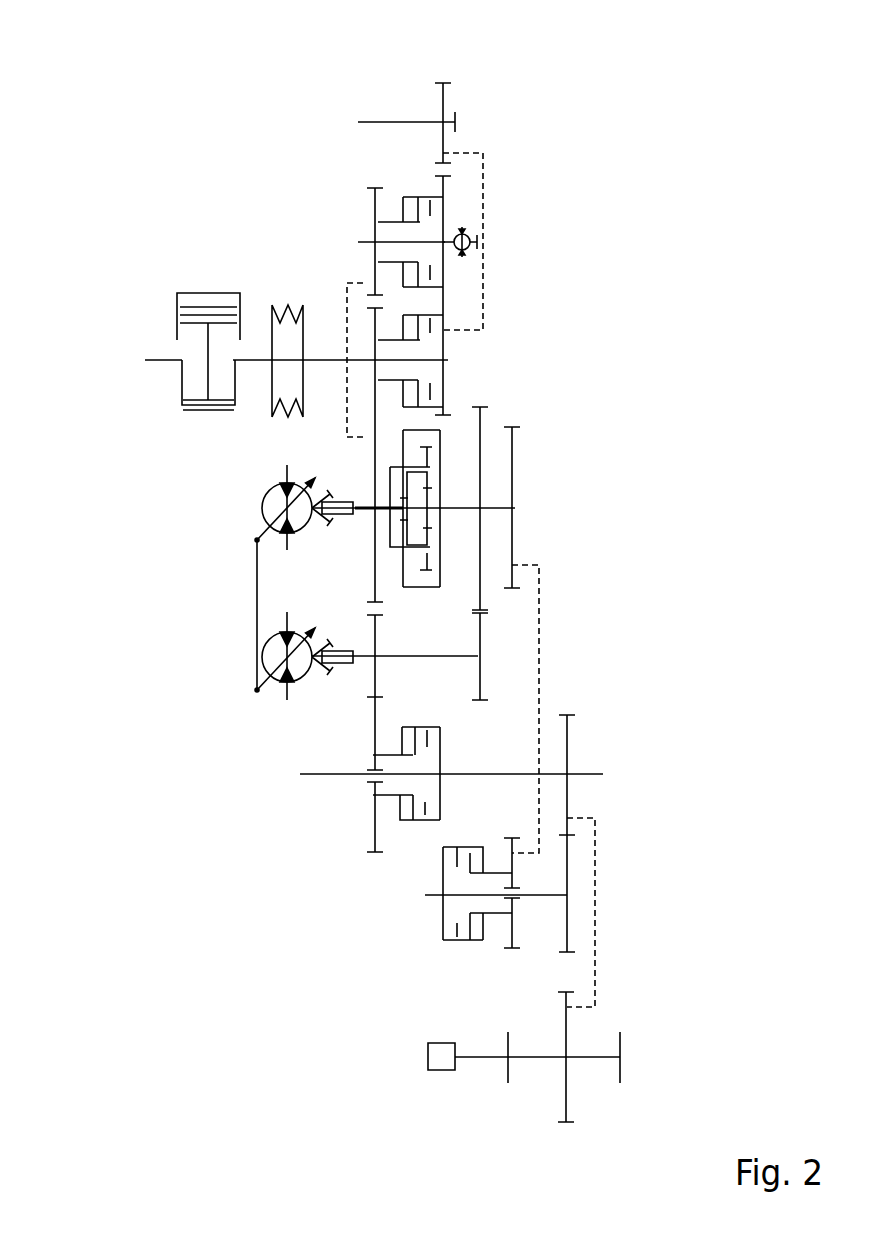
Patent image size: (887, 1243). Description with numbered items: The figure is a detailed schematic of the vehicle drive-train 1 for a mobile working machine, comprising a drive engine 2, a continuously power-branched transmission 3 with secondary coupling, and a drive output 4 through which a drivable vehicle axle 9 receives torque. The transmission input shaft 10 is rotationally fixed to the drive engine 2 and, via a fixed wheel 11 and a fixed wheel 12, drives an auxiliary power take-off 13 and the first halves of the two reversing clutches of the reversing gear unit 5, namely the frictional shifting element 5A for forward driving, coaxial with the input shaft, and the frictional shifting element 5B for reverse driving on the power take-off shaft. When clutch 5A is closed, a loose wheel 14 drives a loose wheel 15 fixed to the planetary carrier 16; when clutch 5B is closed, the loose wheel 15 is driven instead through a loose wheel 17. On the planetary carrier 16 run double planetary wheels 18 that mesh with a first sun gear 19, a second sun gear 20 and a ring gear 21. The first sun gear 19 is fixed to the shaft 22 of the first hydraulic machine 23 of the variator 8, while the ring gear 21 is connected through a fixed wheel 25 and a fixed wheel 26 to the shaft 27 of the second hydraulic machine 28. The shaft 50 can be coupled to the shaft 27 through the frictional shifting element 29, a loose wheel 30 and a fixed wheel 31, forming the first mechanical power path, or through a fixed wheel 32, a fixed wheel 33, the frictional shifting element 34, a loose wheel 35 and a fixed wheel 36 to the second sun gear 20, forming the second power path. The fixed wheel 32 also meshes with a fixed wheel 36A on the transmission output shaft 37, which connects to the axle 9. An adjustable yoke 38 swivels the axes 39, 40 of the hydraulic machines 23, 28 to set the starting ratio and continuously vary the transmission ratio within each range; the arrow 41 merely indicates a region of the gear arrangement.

The vehicle drive-train 1 is at (497, 101).
The drive engine 2 is at (212, 293).
The continuously power-branched transmission 3 is at (562, 583).
The drive output 4 is at (468, 1038).
The reversing gear unit 5 is at (513, 224).
The frictional shifting element 5A is at (412, 313).
The frictional shifting element 5B is at (413, 197).
The variator 8 is at (220, 573).
The drivable vehicle axle 9 is at (428, 1057).
The transmission input shaft 10 is at (327, 357).
The fixed wheel 11 is at (443, 348).
The fixed wheel 12 is at (447, 217).
The auxiliary power take-off 13 is at (362, 240).
The loose wheel 14 is at (375, 322).
The loose wheel 15 is at (370, 582).
The planetary carrier 16 is at (440, 577).
The loose wheel 17 is at (370, 192).
The double planetary wheels 18 is at (427, 537).
The first sun gear 19 is at (392, 498).
The second sun gear 20 is at (427, 497).
The ring gear 21 is at (443, 420).
The shaft 22 is at (370, 514).
The first hydraulic machine 23 is at (262, 490).
The fixed wheel 25 is at (480, 427).
The fixed wheel 26 is at (480, 635).
The shaft 27 is at (420, 656).
The second hydraulic machine 28 is at (287, 688).
The frictional shifting element 29 is at (413, 823).
The loose wheel 30 is at (370, 816).
The fixed wheel 31 is at (373, 673).
The fixed wheel 32 is at (567, 745).
The fixed wheel 33 is at (567, 853).
The frictional shifting element 34 is at (447, 942).
The loose wheel 35 is at (513, 937).
The fixed wheel 36 is at (515, 548).
The fixed wheel 36A is at (567, 1097).
The transmission output shaft 37 is at (583, 1053).
The adjustable yoke 38 is at (285, 616).
The axis 39 is at (260, 530).
The axis 40 is at (257, 692).
The gear set 41 is at (557, 495).
The shaft 50 is at (593, 777).